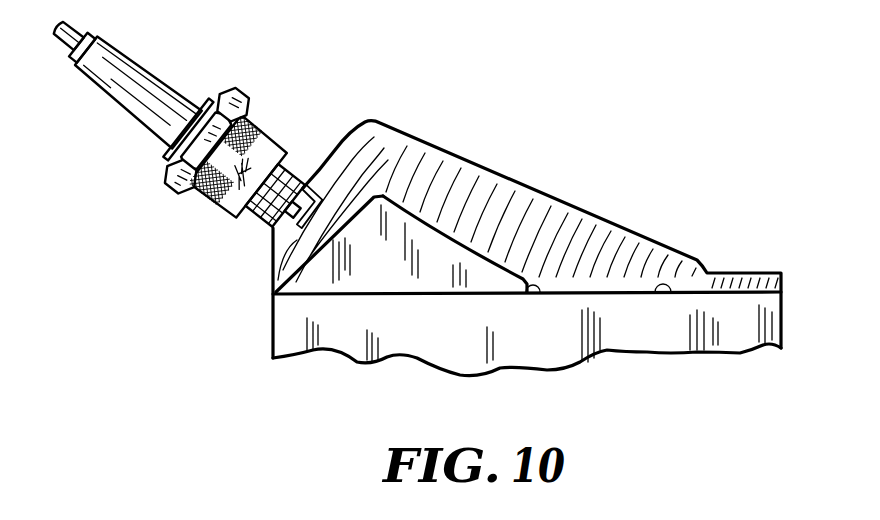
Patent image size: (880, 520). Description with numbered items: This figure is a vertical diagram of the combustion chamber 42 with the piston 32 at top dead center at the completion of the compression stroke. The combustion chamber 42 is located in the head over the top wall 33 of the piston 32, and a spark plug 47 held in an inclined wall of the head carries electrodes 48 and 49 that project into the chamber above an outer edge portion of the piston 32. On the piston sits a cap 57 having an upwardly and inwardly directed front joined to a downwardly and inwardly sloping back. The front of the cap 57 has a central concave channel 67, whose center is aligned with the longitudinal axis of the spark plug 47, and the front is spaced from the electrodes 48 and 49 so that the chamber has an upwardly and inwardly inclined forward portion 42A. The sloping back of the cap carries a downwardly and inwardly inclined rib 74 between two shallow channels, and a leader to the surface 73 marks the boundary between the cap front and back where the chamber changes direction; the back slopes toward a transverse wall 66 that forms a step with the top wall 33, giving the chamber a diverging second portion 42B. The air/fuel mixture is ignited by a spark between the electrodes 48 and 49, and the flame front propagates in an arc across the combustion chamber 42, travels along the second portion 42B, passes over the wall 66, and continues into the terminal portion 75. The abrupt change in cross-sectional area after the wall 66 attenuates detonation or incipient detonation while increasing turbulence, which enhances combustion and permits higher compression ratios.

The piston 32 is at (607, 342).
The top wall 33 is at (668, 294).
The combustion chamber 42 is at (425, 165).
The forward portion of combustion chamber 42A is at (272, 277).
The second portion of combustion chamber 42B is at (620, 245).
The spark plug 47 is at (165, 88).
The electrode 48 is at (272, 248).
The electrode 49 is at (310, 206).
The cap 57 is at (380, 275).
The wall 66 is at (533, 294).
The channel 67 is at (275, 288).
The ridge surface 73 is at (467, 250).
The rib 74 is at (543, 218).
The terminal portion of combustion chamber 75 is at (733, 280).